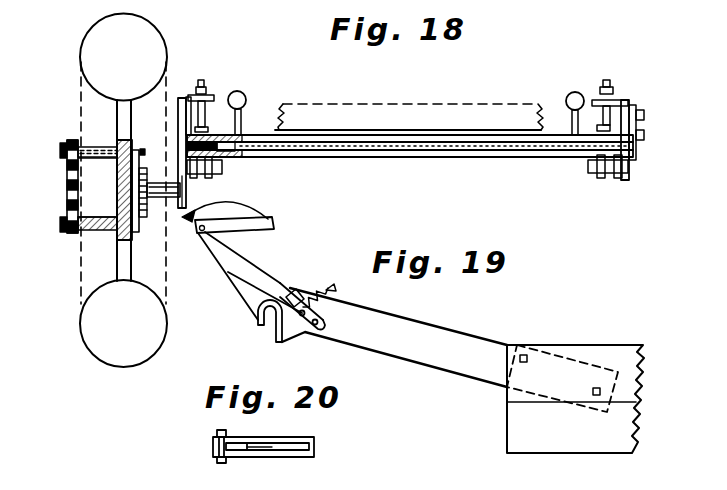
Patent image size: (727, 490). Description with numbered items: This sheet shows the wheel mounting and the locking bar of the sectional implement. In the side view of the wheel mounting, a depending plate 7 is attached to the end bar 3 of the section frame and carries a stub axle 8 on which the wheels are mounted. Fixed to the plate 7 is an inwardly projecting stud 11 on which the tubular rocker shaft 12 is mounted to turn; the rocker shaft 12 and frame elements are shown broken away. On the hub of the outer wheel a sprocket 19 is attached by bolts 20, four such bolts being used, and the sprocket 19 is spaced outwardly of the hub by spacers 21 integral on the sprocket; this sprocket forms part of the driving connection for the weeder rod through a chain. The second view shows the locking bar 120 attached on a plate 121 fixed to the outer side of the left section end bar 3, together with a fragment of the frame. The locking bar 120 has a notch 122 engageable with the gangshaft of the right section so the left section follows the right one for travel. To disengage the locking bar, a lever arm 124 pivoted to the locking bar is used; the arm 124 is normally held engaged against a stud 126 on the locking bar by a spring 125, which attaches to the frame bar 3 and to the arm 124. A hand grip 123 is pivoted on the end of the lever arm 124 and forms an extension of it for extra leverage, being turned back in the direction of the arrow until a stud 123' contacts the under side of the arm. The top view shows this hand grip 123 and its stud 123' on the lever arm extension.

In FIG. 19, the end bar 3 is at (507, 412).
In FIG. 18, the depending plate 7 is at (183, 99).
In FIG. 18, the stub axle 8 is at (164, 198).
In FIG. 18, the stud 11 is at (186, 150).
In FIG. 18, the rocker shaft 12 is at (250, 132).
In FIG. 18, the sprocket 19 is at (67, 188).
In FIG. 18, the bolt 20 is at (60, 144).
In FIG. 18, the spacer 21 is at (93, 147).
In FIG. 19, the locking bar 120 is at (487, 337).
In FIG. 19, the plate 121 is at (568, 345).
In FIG. 19, the notch 122 is at (286, 323).
In FIG. 19, the hand grip 123 is at (236, 205).
In FIG. 20, the hand grip 123 is at (239, 457).
In FIG. 20, the stud 123' is at (279, 465).
In FIG. 19, the lever arm 124 is at (228, 248).
In FIG. 19, the spring 125 is at (330, 284).
In FIG. 19, the stud 126 is at (294, 289).